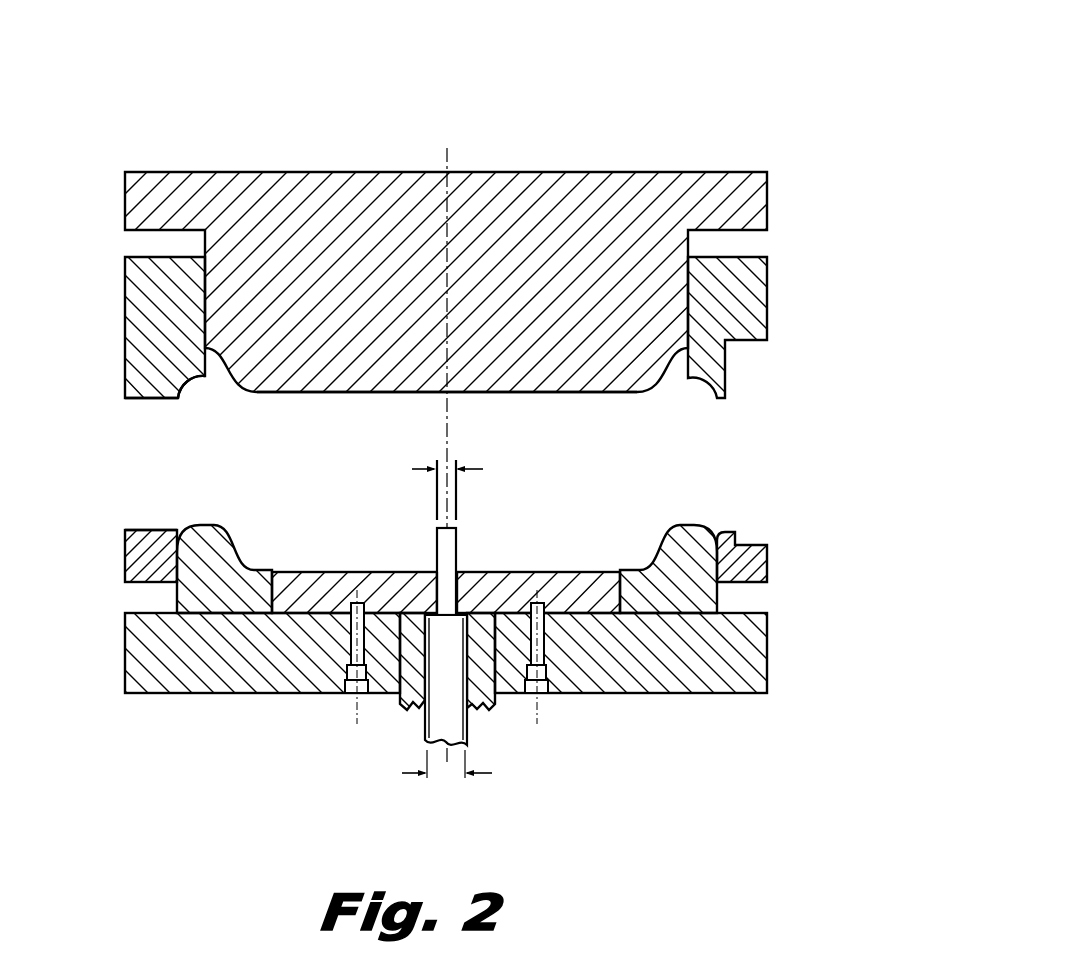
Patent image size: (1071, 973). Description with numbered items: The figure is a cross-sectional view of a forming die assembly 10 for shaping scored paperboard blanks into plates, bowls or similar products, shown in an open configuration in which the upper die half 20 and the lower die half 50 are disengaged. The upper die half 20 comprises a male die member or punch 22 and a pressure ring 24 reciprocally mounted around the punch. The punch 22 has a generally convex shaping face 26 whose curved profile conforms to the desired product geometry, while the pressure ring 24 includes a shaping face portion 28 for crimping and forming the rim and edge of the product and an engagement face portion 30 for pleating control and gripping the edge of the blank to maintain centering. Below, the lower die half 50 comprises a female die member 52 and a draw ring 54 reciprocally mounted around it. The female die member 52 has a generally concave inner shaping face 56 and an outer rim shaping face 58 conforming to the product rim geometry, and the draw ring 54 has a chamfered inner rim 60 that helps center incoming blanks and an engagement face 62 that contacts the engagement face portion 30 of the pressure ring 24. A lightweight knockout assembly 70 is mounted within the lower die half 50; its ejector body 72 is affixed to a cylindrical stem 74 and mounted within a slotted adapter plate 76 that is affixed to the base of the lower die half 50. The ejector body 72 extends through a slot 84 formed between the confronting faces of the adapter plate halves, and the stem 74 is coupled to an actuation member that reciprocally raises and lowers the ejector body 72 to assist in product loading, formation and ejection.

The forming die assembly 10 is at (637, 68).
The upper die half 20 is at (830, 248).
The punch 22 is at (482, 210).
The pressure ring 24 is at (138, 322).
The shaping face 26 is at (493, 394).
The shaping face portion 28 is at (192, 382).
The engagement face portion 30 is at (160, 398).
The lower die half 50 is at (830, 620).
The female die member 52 is at (247, 601).
The draw ring 54 is at (132, 550).
The inner shaping face 56 is at (658, 567).
The outer rim shaping face 58 is at (693, 527).
The chamfered inner rim 60 is at (170, 536).
The engagement face 62 is at (145, 530).
The lightweight knockout assembly 70 is at (409, 517).
The ejector body 72 is at (457, 545).
The cylindrical stem 74 is at (463, 730).
The slotted adapter plate 76 is at (400, 703).
The slot 84 is at (432, 562).